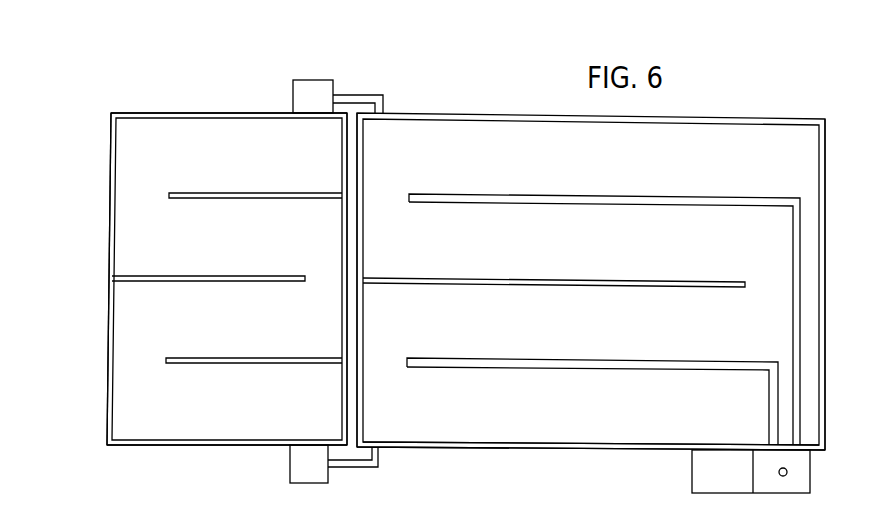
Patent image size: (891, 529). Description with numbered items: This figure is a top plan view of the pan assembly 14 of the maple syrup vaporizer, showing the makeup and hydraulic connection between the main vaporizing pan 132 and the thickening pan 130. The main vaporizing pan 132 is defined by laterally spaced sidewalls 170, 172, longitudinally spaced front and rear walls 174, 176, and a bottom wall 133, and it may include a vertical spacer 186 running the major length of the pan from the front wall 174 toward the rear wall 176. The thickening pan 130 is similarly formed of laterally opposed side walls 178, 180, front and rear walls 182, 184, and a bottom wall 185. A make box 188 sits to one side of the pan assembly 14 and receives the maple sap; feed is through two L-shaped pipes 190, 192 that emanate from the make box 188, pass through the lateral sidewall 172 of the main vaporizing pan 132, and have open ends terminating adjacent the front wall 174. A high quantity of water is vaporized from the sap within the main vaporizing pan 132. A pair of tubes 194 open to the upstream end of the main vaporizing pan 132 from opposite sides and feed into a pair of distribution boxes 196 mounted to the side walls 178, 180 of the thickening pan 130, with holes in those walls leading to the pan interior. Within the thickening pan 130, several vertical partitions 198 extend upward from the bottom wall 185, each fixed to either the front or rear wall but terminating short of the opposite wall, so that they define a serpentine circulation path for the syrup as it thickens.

The pan assembly 14 is at (485, 472).
The thickening pan 130 is at (196, 453).
The main vaporizing pan 132 is at (555, 455).
The bottom wall 133 is at (654, 175).
The sidewall 170 is at (497, 114).
The sidewall 172 is at (643, 453).
The front wall 174 is at (364, 178).
The rear wall 176 is at (826, 190).
The side wall 178 is at (208, 112).
The side wall 180 is at (137, 450).
The front wall 182 is at (108, 195).
The rear wall 184 is at (342, 164).
The bottom wall 185 is at (209, 332).
The vertical spacer 186 is at (545, 277).
The make box 188 is at (782, 488).
The pipe 190 is at (792, 243).
The pipe 192 is at (768, 398).
The tube 194 is at (368, 93).
The distribution box 196 is at (293, 92).
The vertical partition 198 is at (252, 192).